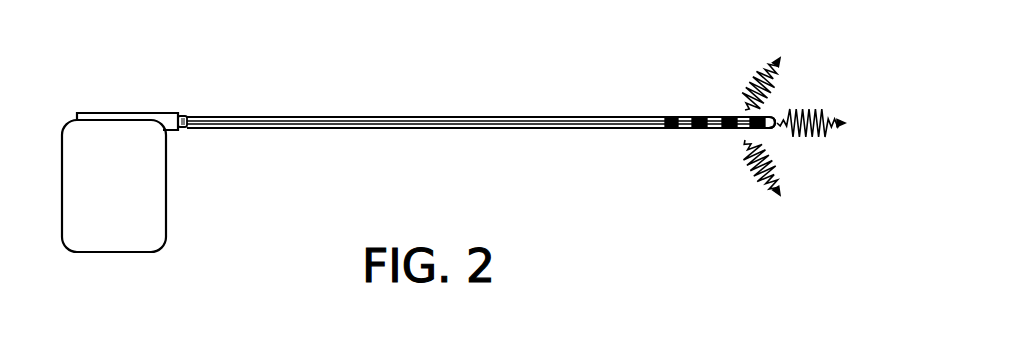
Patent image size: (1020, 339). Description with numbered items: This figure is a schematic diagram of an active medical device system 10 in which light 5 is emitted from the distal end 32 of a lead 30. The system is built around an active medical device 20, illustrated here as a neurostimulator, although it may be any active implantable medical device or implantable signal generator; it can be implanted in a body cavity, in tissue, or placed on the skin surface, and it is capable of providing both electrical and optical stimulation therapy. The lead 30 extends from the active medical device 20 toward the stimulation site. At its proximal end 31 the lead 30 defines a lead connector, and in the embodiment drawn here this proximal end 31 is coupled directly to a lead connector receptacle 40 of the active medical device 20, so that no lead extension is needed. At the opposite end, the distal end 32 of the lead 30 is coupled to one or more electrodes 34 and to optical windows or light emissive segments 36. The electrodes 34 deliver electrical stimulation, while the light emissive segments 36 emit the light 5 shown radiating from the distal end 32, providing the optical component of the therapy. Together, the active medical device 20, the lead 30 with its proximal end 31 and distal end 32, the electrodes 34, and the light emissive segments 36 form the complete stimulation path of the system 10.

The active medical device system 10 is at (432, 77).
The active medical device 20 is at (128, 271).
The lead 30 is at (510, 117).
The proximal end 31 is at (185, 114).
The distal end 32 is at (781, 99).
The electrodes 34 is at (672, 117).
The light emissive segments 36 is at (777, 128).
The lead connector receptacle 40 is at (112, 113).
The light 5 is at (763, 168).